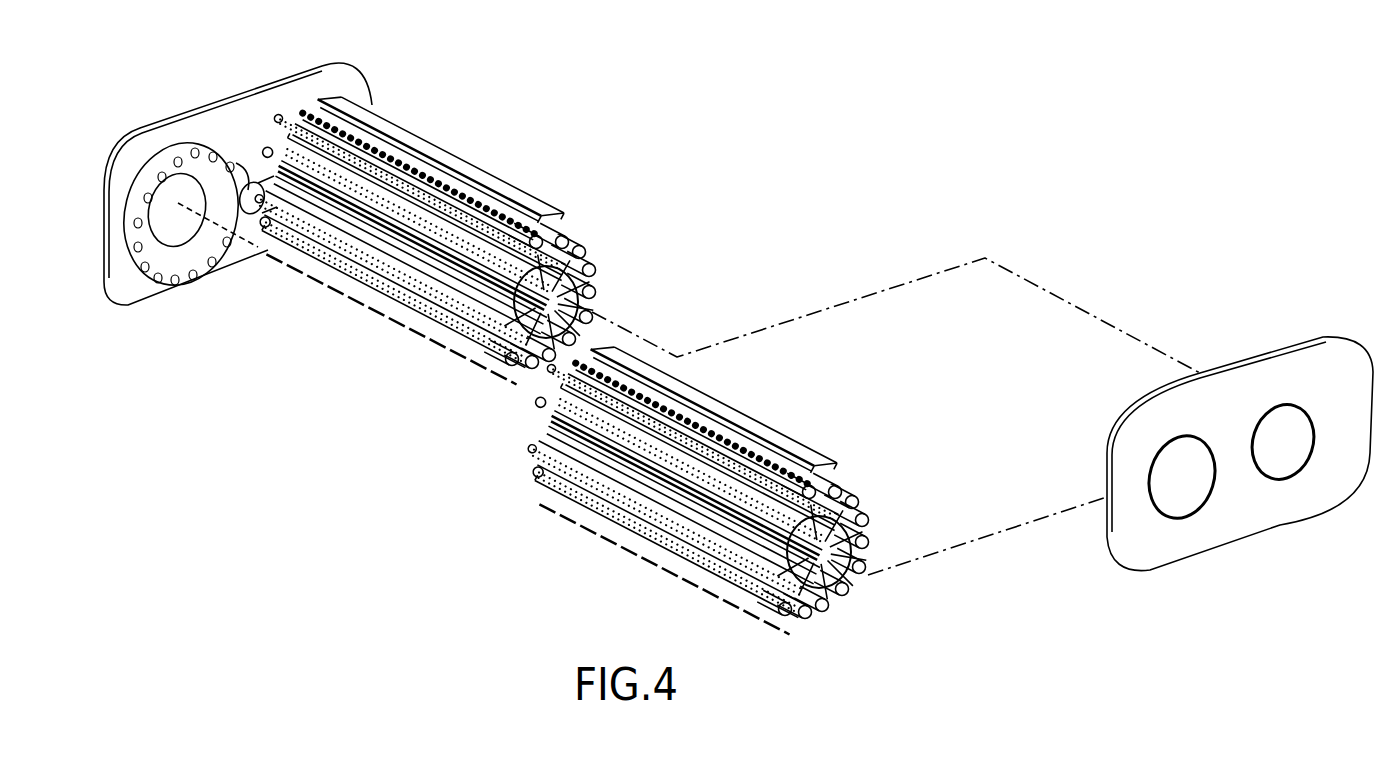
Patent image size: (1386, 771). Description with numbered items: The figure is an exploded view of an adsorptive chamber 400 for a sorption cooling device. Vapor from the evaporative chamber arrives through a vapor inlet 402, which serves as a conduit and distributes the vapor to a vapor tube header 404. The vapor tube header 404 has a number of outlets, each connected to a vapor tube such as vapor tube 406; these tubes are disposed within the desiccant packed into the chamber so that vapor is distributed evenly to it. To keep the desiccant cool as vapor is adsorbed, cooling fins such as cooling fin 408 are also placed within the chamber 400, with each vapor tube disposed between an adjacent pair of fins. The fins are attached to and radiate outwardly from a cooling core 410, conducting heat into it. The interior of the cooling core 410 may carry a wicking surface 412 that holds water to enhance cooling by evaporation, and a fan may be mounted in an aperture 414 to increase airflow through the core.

The adsorptive chamber 400 is at (668, 212).
The vapor inlet 402 is at (250, 205).
The vapor tube header 404 is at (148, 278).
The vapor tube 406 is at (547, 475).
The cooling fin 408 is at (650, 553).
The cooling core 410 is at (845, 590).
The wicking surface 412 is at (838, 540).
The aperture 414 is at (185, 232).